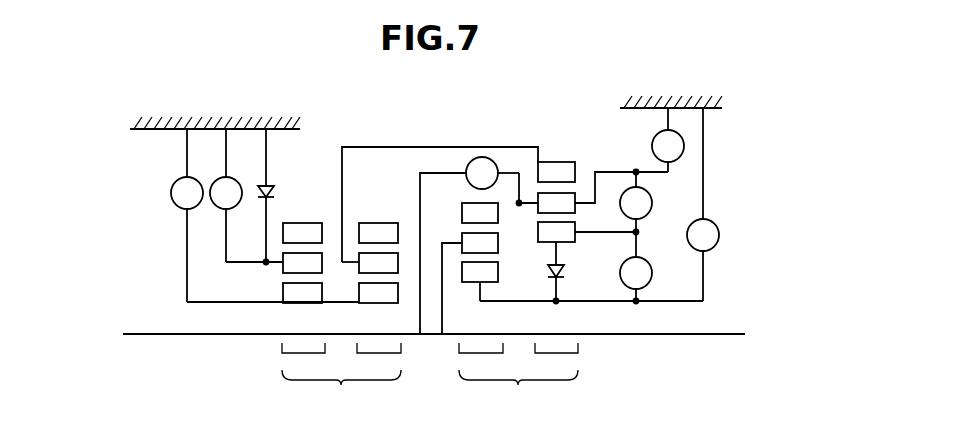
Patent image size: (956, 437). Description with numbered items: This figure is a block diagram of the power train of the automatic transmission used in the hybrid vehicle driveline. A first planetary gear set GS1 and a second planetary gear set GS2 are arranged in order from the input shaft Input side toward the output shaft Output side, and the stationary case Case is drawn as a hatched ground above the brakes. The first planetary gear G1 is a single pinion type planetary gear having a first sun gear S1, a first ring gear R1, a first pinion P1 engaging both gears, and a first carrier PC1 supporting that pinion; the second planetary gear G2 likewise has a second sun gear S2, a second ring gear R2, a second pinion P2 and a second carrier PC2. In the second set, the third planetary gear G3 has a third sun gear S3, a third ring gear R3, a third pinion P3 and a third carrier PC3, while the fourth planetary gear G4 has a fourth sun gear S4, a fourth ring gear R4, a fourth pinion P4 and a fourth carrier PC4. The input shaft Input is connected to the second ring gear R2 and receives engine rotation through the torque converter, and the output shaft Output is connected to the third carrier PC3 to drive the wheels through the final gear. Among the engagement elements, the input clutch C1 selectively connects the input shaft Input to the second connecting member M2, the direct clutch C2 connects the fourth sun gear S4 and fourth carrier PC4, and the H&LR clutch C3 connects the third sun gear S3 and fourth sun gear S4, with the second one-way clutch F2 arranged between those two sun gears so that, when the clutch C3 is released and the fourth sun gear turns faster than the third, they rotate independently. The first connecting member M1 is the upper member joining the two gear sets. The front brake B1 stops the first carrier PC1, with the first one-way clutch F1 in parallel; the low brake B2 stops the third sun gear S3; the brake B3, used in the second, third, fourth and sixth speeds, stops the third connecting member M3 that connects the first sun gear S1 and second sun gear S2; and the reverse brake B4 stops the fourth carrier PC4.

The case Case is at (205, 128).
The front brake B1 is at (226, 195).
The low brake B2 is at (703, 204).
The 2346 brake B3 is at (187, 215).
The reverse brake B4 is at (668, 140).
The first one-way clutch F1 is at (275, 173).
The second one-way clutch F2 is at (578, 267).
The input clutch C1 is at (469, 245).
The direct clutch C2 is at (636, 214).
The H&LR clutch C3 is at (636, 280).
The first ring gear R1 is at (302, 233).
The second ring gear R2 is at (378, 233).
The third ring gear R3 is at (480, 213).
The fourth ring gear R4 is at (556, 172).
The first pinion P1 is at (302, 263).
The second pinion P2 is at (378, 263).
The third pinion P3 is at (480, 243).
The fourth pinion P4 is at (556, 203).
The first sun gear S1 is at (302, 293).
The second sun gear S2 is at (378, 293).
The third sun gear S3 is at (582, 281).
The fourth sun gear S4 is at (588, 232).
The first carrier PC1 is at (281, 266).
The second carrier PC2 is at (348, 253).
The third carrier PC3 is at (455, 243).
The fourth carrier PC4 is at (587, 200).
The first connecting member M1 is at (462, 147).
The second connecting member M2 is at (519, 206).
The third connecting member M3 is at (342, 303).
The first planetary gear G1 is at (303, 359).
The second planetary gear G2 is at (379, 359).
The third planetary gear G3 is at (481, 359).
The fourth planetary gear G4 is at (556, 359).
The first planetary gear set GS1 is at (341, 388).
The second planetary gear set GS2 is at (518, 388).
The input shaft Input is at (160, 336).
The output shaft Output is at (643, 336).